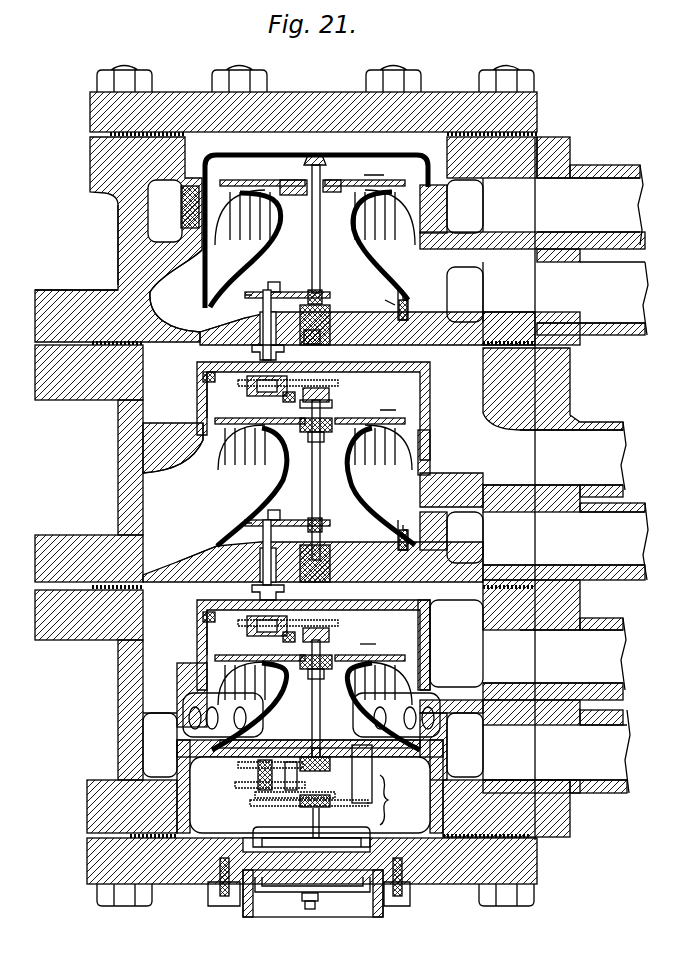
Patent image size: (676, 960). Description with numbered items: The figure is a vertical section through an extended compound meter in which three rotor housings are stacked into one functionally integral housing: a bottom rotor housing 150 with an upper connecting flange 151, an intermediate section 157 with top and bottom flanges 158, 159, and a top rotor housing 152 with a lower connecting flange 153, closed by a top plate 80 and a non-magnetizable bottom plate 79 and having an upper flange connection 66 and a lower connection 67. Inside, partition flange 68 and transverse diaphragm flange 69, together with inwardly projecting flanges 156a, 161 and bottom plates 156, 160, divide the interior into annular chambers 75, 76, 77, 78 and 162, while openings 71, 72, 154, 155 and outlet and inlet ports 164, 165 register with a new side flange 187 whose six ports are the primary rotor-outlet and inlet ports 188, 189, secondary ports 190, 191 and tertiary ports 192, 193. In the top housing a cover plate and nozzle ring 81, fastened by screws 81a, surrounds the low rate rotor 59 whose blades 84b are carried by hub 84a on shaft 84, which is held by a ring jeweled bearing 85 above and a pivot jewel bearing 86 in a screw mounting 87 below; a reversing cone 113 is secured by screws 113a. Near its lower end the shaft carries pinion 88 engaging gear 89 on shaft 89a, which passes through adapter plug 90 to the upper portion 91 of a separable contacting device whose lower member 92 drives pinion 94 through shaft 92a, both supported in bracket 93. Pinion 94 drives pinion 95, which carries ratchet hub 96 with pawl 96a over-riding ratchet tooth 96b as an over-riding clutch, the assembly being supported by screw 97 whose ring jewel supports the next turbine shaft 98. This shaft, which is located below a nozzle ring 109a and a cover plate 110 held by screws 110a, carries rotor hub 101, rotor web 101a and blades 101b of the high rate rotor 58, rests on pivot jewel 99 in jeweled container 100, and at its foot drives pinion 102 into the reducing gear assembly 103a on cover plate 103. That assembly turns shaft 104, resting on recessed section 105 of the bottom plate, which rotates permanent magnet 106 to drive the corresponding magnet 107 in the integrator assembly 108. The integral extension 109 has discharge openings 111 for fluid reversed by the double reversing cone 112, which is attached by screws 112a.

The high rate rotor 58 is at (367, 636).
The low rate rotor 59 is at (380, 285).
The upper flange connection 66 is at (90, 156).
The lower connection 67 is at (87, 786).
The partition flange 68 is at (177, 685).
The transverse diaphragm flange 69 is at (192, 322).
The opening 71 is at (498, 752).
The opening 72 is at (553, 622).
The annular chamber 75 is at (313, 740).
The annular chamber 76 is at (316, 645).
The annular chamber 77 is at (316, 299).
The annular chamber 78 is at (315, 211).
The bottom plate 79 is at (87, 848).
The top plate 80 is at (90, 100).
The cover plate and nozzle ring 81 is at (205, 160).
The screws 81a is at (181, 198).
The shaft 84 is at (320, 233).
The hub 84a is at (318, 196).
The blades 84b is at (246, 225).
The ring jeweled bearing 85 is at (304, 163).
The pivot jewel bearing 86 is at (330, 315).
The screw mounting 87 is at (330, 345).
The pinion 88 is at (322, 294).
The gear 89 is at (268, 288).
The shaft 89a is at (300, 292).
The adapter plug 90 is at (245, 294).
The upper portion of separable contacting device 91 is at (262, 345).
The lower member of contacting device 92 is at (252, 350).
The shaft 92a is at (311, 344).
The bracket 93 is at (245, 400).
The pinion 94 is at (247, 385).
The pinion 95 is at (338, 383).
The ratchet hub 96 is at (329, 398).
The pawl 96a is at (286, 400).
The ratchet tooth 96b is at (285, 424).
The screw 97 is at (332, 426).
The lower turbine shaft 98 is at (320, 480).
The pivot jewel 99 is at (305, 777).
The jeweled container 100 is at (330, 762).
The rotor hub 101 is at (323, 432).
The rotor web 101a is at (421, 408).
The blades 101b is at (400, 452).
The pinion 102 is at (322, 742).
The cover plate 103 is at (376, 760).
The reducing gear assembly 103a is at (402, 800).
The shaft 104 is at (300, 808).
The recessed section 105 is at (375, 845).
The permanent magnet 106 is at (360, 831).
The permanent magnet 107 is at (285, 905).
The integrator assembly 108 is at (370, 915).
The integral extension 109 is at (190, 800).
The nozzle ring 109a is at (428, 406).
The cover plate 110 is at (370, 364).
The screws 110a is at (203, 377).
The openings 111 is at (311, 714).
The double reversing cone 112 is at (275, 704).
The screws 112a is at (183, 735).
The reversing cone 113 is at (372, 232).
The screws 113a is at (405, 288).
The bottom rotor housing 150 is at (118, 708).
The upper connecting flange 151 is at (105, 640).
The top rotor housing 152 is at (118, 233).
The lower connecting flange 153 is at (88, 282).
The opening 154 is at (502, 292).
The opening 155 is at (502, 205).
The bottom plate 156 is at (385, 300).
The inwardly projecting flange 156a is at (170, 262).
The intermediate section 157 is at (118, 455).
The top flange 158 is at (100, 400).
The bottom flange 159 is at (100, 535).
The contoured bottom plate 160 is at (200, 590).
The inwardly projecting flange 161 is at (205, 472).
The annular chamber 162 is at (173, 484).
The outlet port 164 is at (502, 538).
The inlet port 165 is at (553, 406).
The side flange 187 is at (570, 146).
The primary rotor-outlet port 188 is at (556, 751).
The primary rotor-inlet port 189 is at (554, 654).
The secondary rotor-outlet port 190 is at (565, 541).
The secondary rotor-inlet port 191 is at (554, 456).
The tertiary rotor-outlet port 192 is at (592, 298).
The tertiary rotor-inlet port 193 is at (590, 205).